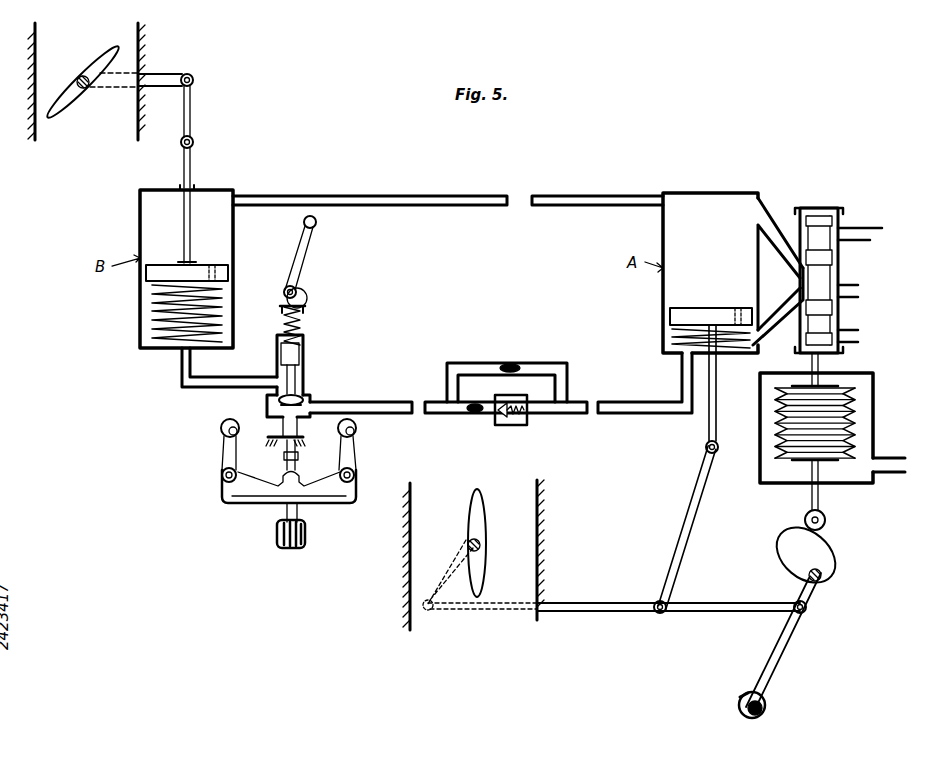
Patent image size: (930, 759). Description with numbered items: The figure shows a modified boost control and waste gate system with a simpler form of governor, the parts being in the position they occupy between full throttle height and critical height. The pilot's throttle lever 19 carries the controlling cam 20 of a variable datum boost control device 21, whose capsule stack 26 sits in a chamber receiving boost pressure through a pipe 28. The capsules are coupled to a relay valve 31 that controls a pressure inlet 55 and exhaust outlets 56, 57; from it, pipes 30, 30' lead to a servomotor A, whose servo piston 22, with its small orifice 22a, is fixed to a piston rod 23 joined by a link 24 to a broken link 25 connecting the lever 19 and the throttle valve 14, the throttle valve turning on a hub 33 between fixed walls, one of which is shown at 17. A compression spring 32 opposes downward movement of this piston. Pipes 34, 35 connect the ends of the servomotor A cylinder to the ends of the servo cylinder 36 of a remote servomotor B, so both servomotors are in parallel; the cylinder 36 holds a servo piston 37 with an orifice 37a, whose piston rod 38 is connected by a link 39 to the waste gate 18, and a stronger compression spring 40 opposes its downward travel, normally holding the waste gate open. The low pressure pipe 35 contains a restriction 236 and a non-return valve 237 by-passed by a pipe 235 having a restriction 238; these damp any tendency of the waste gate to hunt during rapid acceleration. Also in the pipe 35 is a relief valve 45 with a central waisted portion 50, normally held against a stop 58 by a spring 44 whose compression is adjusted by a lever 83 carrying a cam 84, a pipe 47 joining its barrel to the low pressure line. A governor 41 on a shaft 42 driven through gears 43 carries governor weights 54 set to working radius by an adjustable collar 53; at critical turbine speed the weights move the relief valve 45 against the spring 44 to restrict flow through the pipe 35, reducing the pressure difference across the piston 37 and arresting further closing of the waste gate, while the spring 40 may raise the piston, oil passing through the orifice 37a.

The throttle valve 14 is at (478, 508).
The wall 17 is at (35, 78).
The waste gate 18 is at (104, 62).
The pilot's throttle lever 19 is at (780, 662).
The controlling cam 20 is at (780, 553).
The variable datum boost control device 21 is at (873, 388).
The servo piston 22 is at (670, 318).
The orifice 22a is at (738, 307).
The piston rod 23 is at (717, 402).
The link 24 is at (695, 507).
The broken link 25 is at (648, 622).
The capsule stack 26 is at (856, 436).
The pipe 28 is at (898, 474).
The pipe 30 is at (780, 260).
The pipe 30' is at (778, 306).
The relay valve 31 is at (832, 258).
The compression spring 32 is at (676, 350).
The hub 33 is at (481, 540).
The pipe 34 is at (470, 192).
The pipe 35 is at (600, 400).
The servo cylinder 36 is at (140, 200).
The servo piston 37 is at (157, 264).
The orifice 37a is at (211, 264).
The piston rod 38 is at (191, 155).
The link 39 is at (191, 113).
The compression spring 40 is at (150, 320).
The governor 41 is at (283, 480).
The shaft 42 is at (299, 515).
The gears 43 is at (277, 542).
The spring 44 is at (300, 322).
The relief valve 45 is at (305, 403).
The pipe 47 is at (182, 380).
The central waisted portion 50 is at (296, 378).
The adjustable collar 53 is at (285, 456).
The governor weights 54 is at (224, 422).
The pressure inlet 55 is at (858, 286).
The exhaust outlet 56 is at (876, 228).
The exhaust outlet 57 is at (855, 326).
The stop 58 is at (268, 432).
The lever 83 is at (308, 240).
The cam 84 is at (307, 298).
The by-pass pipe 235 is at (548, 362).
The restriction 236 is at (473, 403).
The non-return valve 237 is at (505, 427).
The restriction 238 is at (507, 362).